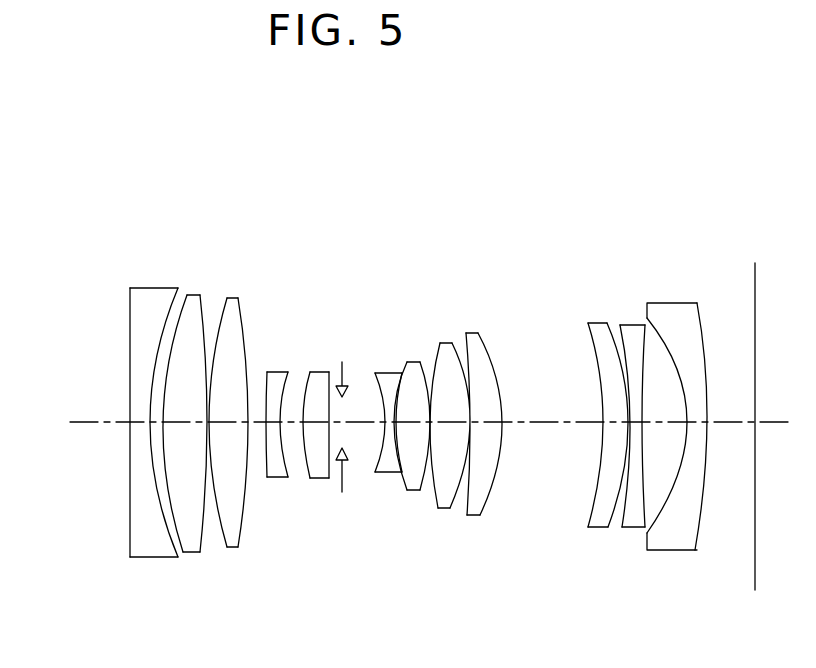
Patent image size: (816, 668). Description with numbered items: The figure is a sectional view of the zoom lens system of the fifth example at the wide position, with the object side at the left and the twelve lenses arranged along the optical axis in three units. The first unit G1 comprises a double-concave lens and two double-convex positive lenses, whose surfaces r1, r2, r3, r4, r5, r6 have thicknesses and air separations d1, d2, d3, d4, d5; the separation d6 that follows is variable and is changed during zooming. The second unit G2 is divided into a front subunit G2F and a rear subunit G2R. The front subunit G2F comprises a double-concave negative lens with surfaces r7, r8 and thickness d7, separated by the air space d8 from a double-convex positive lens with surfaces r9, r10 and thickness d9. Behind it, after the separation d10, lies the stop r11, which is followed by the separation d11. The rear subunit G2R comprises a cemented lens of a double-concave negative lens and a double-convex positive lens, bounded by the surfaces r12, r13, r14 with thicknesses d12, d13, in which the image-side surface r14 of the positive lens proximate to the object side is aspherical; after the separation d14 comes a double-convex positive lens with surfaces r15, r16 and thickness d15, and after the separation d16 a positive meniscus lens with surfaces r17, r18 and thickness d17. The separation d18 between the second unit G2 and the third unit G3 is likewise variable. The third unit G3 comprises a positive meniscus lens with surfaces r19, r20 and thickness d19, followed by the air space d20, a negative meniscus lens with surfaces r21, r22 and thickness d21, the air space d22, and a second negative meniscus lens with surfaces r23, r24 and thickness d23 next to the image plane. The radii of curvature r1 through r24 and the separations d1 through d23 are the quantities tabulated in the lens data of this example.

The first unit G1 is at (243, 218).
The second unit G2 is at (477, 160).
The front subunit G2F is at (330, 218).
The rear subunit G2R is at (473, 218).
The third unit G3 is at (700, 218).
The radius of curvature of the first lens surface r1 is at (131, 328).
The radius of curvature of the second lens surface r2 is at (163, 327).
The radius of curvature of the third lens surface r3 is at (186, 312).
The radius of curvature of the fourth lens surface r4 is at (205, 312).
The radius of curvature of the fifth lens surface r5 is at (224, 312).
The radius of curvature of the sixth lens surface r6 is at (243, 312).
The radius of curvature of the seventh lens surface r7 is at (264, 368).
The radius of curvature of the eighth lens surface r8 is at (288, 370).
The radius of curvature of the ninth lens surface r9 is at (308, 370).
The radius of curvature of the tenth lens surface r10 is at (330, 370).
The stop r11 is at (345, 405).
The radius of curvature of the twelfth lens surface r12 is at (374, 372).
The radius of curvature of the thirteenth lens surface r13 is at (394, 380).
The radius of curvature of the fourteenth lens surface r14 is at (408, 360).
The radius of curvature of the fifteenth lens surface r15 is at (424, 362).
The radius of curvature of the sixteenth lens surface r16 is at (445, 342).
The radius of curvature of the seventeenth lens surface r17 is at (474, 343).
The radius of curvature of the eighteenth lens surface r18 is at (482, 338).
The radius of curvature of the nineteenth lens surface r19 is at (589, 345).
The radius of curvature of the twentieth lens surface r20 is at (607, 330).
The radius of curvature of the twenty-first lens surface r21 is at (627, 327).
The radius of curvature of the twenty-second lens surface r22 is at (641, 340).
The radius of curvature of the twenty-third lens surface r23 is at (670, 345).
The radius of curvature of the twenty-fourth lens surface r24 is at (703, 340).
The separation between adjacent lens surfaces d1 is at (131, 450).
The separation between adjacent lens surfaces d2 is at (142, 557).
The separation between adjacent lens surfaces d3 is at (180, 442).
The separation between adjacent lens surfaces d4 is at (207, 470).
The separation between adjacent lens surfaces d5 is at (240, 545).
The separation between adjacent lens surfaces d6 is at (258, 445).
The separation between adjacent lens surfaces d7 is at (282, 478).
The separation between adjacent lens surfaces d8 is at (298, 470).
The separation between adjacent lens surfaces d9 is at (314, 478).
The separation between adjacent lens surfaces d10 is at (333, 445).
The separation between adjacent lens surfaces d11 is at (361, 444).
The separation between adjacent lens surfaces d12 is at (383, 473).
The separation between adjacent lens surfaces d13 is at (418, 492).
The separation between adjacent lens surfaces d14 is at (436, 470).
The separation between adjacent lens surfaces d15 is at (454, 444).
The separation between adjacent lens surfaces d16 is at (475, 462).
The separation between adjacent lens surfaces d17 is at (496, 463).
The separation between adjacent lens surfaces d18 is at (543, 444).
The separation between adjacent lens surfaces d19 is at (600, 458).
The separation between adjacent lens surfaces d20 is at (618, 512).
The separation between adjacent lens surfaces d21 is at (634, 525).
The separation between adjacent lens surfaces d22 is at (664, 442).
The separation between adjacent lens surfaces d23 is at (688, 552).